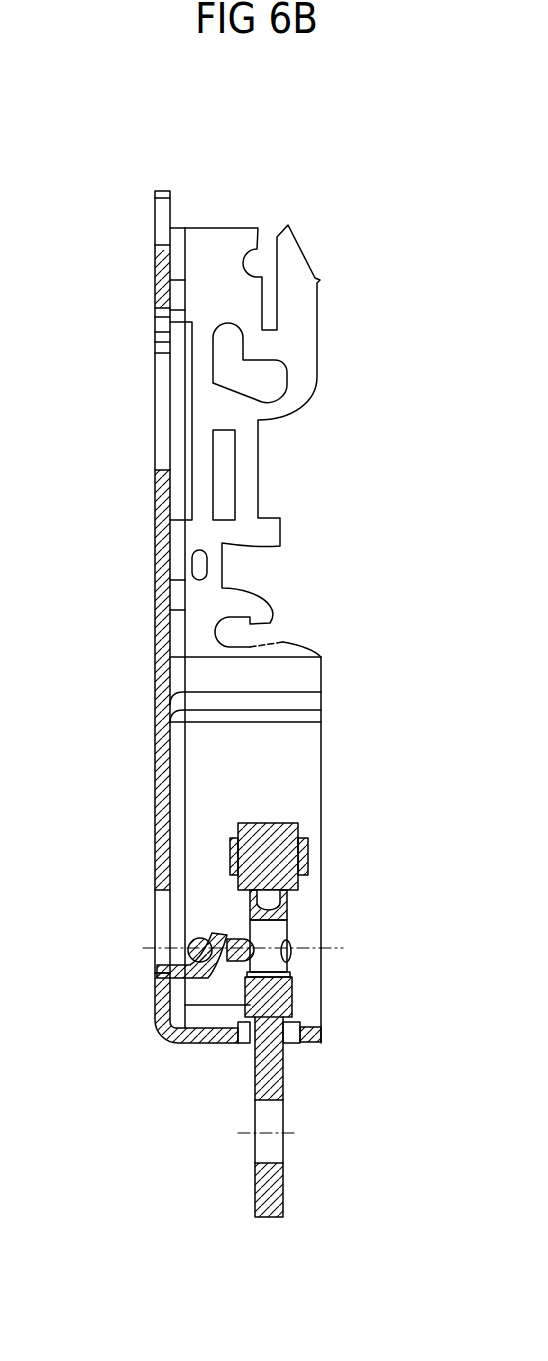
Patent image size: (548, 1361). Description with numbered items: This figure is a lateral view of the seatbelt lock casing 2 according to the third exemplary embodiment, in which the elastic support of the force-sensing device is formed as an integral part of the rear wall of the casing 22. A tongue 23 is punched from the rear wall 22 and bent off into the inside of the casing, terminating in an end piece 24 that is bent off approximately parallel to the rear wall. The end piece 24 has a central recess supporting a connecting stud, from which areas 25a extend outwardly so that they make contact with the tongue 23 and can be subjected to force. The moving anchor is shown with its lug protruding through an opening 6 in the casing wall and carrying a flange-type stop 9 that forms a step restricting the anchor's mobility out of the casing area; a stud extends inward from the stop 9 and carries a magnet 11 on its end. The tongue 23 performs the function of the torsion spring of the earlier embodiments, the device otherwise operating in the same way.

The seatbelt lock casing 2 is at (295, 342).
The opening 6 is at (288, 1043).
The flange-type stop 9 is at (288, 1000).
The magnet 11 is at (257, 823).
The rear wall of the casing 22 is at (153, 855).
The tongue 23 is at (158, 973).
The end piece 24 is at (220, 933).
The areas 25a is at (155, 948).